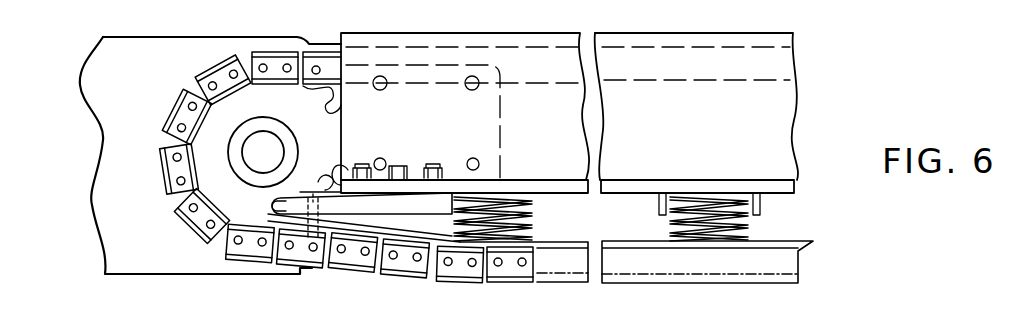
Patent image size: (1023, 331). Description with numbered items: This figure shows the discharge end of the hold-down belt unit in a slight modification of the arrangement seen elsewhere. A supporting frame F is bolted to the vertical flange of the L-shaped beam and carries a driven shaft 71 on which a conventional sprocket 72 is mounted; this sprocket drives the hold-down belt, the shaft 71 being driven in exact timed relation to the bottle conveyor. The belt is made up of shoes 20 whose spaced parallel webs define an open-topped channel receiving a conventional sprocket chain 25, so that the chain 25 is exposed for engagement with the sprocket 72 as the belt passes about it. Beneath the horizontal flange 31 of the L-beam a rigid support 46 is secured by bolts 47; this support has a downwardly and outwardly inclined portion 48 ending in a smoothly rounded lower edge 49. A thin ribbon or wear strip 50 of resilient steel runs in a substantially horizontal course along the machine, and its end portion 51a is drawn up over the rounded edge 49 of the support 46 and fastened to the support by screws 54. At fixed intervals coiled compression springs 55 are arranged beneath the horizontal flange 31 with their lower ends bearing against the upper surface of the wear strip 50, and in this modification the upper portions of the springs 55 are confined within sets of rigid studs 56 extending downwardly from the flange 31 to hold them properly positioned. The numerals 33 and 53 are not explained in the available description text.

The supporting frame F is at (197, 48).
The upper housing 33 is at (304, 56).
The driven shaft 71 is at (271, 146).
The sprocket 72 is at (196, 222).
The sprocket chain 25 is at (211, 260).
The shoe 20 is at (513, 268).
The horizontal flange 31 is at (532, 183).
The bolt 47 is at (428, 166).
The end portion of wear strip 51a is at (342, 177).
The screw 54 is at (322, 182).
The rigid support 46 is at (387, 210).
The hook 53 is at (272, 219).
The rounded lower edge 49 is at (285, 214).
The inclined portion 48 is at (305, 213).
The coiled compression spring 55 is at (683, 210).
The rigid stud 56 is at (657, 205).
The wear strip 50 is at (798, 239).